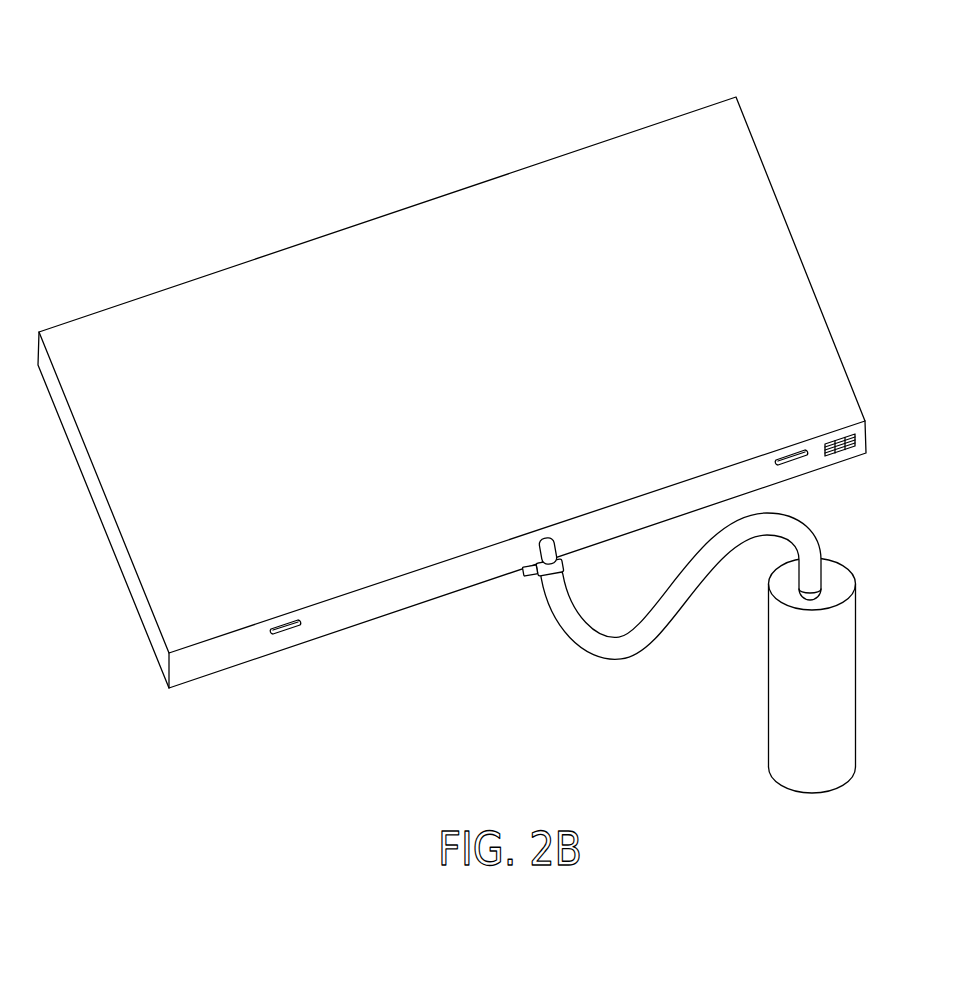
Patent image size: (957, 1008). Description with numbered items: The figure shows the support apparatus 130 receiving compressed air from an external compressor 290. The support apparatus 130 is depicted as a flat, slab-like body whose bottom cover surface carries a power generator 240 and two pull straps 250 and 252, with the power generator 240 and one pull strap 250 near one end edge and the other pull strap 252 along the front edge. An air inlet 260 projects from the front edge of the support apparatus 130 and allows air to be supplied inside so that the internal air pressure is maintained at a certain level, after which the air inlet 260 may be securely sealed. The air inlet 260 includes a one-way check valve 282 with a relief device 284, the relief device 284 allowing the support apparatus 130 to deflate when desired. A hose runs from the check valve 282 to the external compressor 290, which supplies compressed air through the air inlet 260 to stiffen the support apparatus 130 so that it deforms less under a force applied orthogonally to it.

The support apparatus 130 is at (469, 370).
The power generator 240 is at (848, 455).
The pull strap 250 is at (796, 467).
The pull strap 252 is at (290, 633).
The air inlet 260 is at (546, 540).
The one-way check valve 282 is at (563, 565).
The relief device 284 is at (527, 578).
The external compressor 290 is at (856, 635).